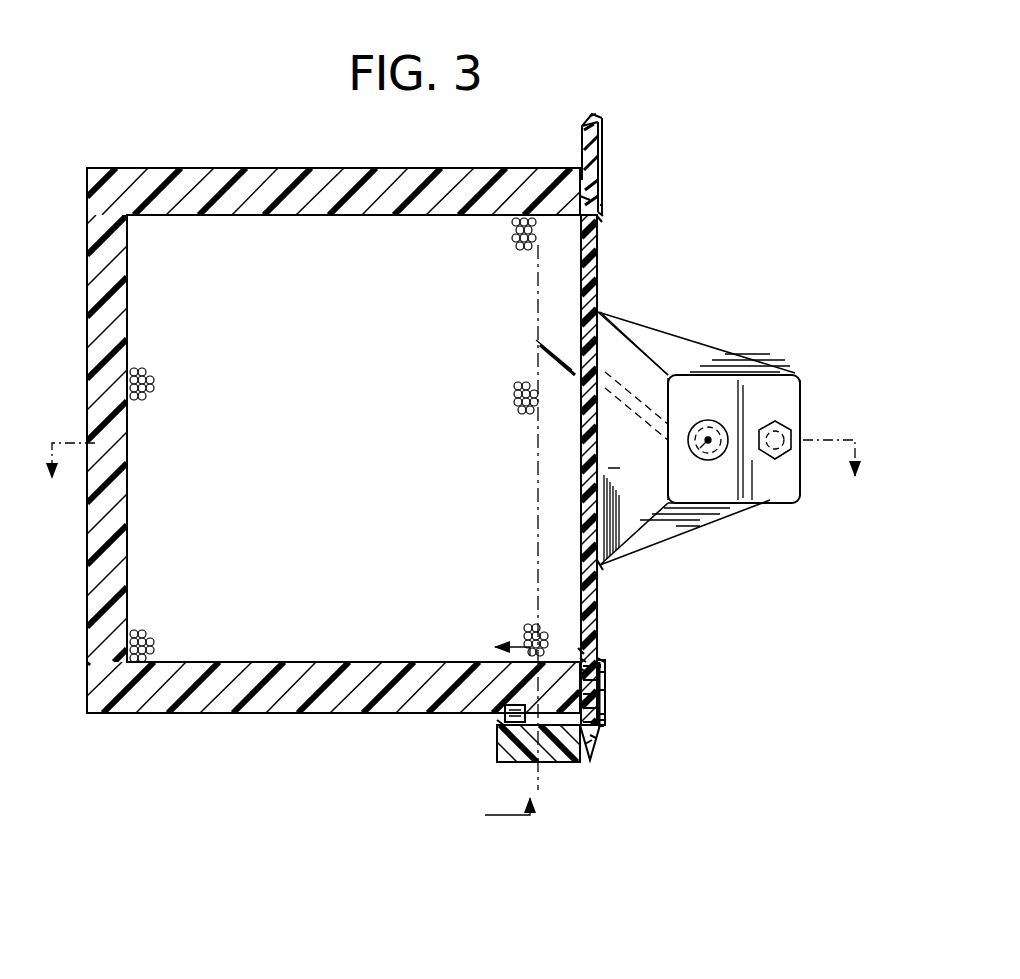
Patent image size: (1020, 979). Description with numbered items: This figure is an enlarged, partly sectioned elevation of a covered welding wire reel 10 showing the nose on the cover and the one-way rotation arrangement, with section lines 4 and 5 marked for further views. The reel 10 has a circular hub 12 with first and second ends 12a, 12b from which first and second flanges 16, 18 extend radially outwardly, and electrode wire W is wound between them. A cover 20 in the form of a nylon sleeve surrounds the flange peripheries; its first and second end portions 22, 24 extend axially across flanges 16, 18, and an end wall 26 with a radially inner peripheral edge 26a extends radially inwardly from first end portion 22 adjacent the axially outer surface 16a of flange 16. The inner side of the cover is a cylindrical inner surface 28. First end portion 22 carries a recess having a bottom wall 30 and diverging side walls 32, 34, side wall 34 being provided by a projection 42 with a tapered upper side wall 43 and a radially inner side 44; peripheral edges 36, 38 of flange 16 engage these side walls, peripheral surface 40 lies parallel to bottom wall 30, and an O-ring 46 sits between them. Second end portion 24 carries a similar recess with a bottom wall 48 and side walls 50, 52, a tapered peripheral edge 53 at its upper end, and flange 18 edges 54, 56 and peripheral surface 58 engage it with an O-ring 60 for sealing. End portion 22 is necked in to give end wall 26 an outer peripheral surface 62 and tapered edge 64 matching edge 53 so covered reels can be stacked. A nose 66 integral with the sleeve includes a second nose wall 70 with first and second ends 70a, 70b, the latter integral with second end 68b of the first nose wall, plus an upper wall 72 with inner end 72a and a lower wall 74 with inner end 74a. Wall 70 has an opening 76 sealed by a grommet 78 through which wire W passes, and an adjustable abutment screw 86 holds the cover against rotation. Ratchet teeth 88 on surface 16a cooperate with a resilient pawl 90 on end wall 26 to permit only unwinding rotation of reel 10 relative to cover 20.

The reel 10 is at (235, 715).
The circular hub 12 is at (115, 540).
The first end of hub 12a is at (98, 715).
The second end of hub 12b is at (100, 170).
The first flange 16 is at (325, 715).
The axially outer surface of first flange 16a is at (400, 715).
The second flange 18 is at (305, 170).
The cover 20 is at (612, 104).
The first end portion 22 is at (632, 700).
The second end portion 24 is at (656, 190).
The end wall 26 is at (548, 770).
The radially inner peripheral edge 26a is at (505, 760).
The cylindrical inner surface 28 is at (583, 485).
The bottom wall 30 is at (603, 672).
The side wall 32 is at (603, 720).
The side wall 34 is at (600, 665).
The peripheral edge 36 is at (595, 736).
The peripheral edge 38 is at (600, 660).
The peripheral surface 40 is at (603, 715).
The projection 42 is at (583, 660).
The upper side wall 43 is at (580, 650).
The radially inner side 44 is at (583, 670).
The O-ring 46 is at (603, 690).
The bottom wall 48 is at (602, 178).
The side wall 50 is at (603, 212).
The side wall 52 is at (600, 160).
The peripheral edge 53 is at (590, 118).
The peripheral edge 54 is at (600, 220).
The peripheral edge 56 is at (600, 130).
The peripheral surface 58 is at (603, 205).
The O-ring 60 is at (590, 196).
The outer peripheral surface 62 is at (590, 745).
The tapered edge 64 is at (600, 726).
The nose 66 is at (797, 359).
The second end of first nose wall 68b is at (800, 418).
The second nose wall 70 is at (770, 485).
The first end of second nose wall 70a is at (623, 327).
The second end of second nose wall 70b is at (800, 395).
The upper wall 72 is at (683, 358).
The inner end of upper wall 72a is at (598, 312).
The lower wall 74 is at (720, 515).
The inner end of lower wall 74a is at (600, 567).
The opening 76 is at (700, 448).
The grommet 78 is at (712, 440).
The adjustable abutment screw 86 is at (787, 456).
The ratchet teeth 88 is at (500, 720).
The pawl 90 is at (515, 708).
The electrode wire W is at (522, 395).
The section line 4- 4 is at (492, 734).
The section line 5- 5 is at (458, 489).